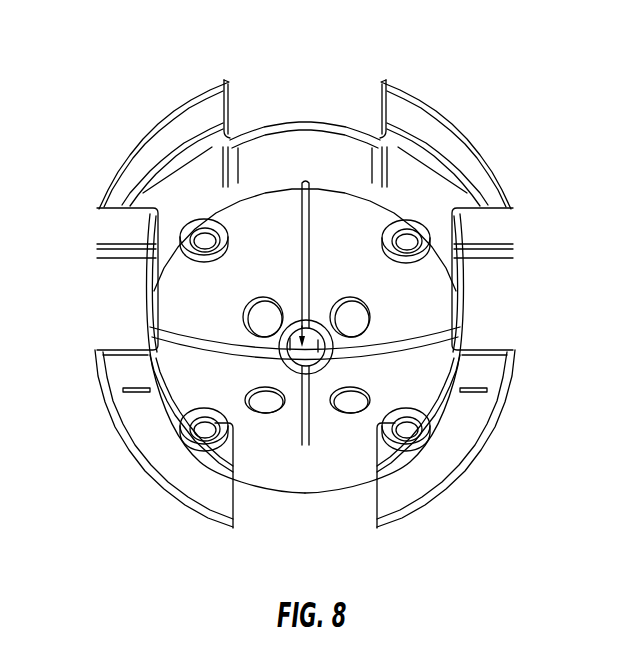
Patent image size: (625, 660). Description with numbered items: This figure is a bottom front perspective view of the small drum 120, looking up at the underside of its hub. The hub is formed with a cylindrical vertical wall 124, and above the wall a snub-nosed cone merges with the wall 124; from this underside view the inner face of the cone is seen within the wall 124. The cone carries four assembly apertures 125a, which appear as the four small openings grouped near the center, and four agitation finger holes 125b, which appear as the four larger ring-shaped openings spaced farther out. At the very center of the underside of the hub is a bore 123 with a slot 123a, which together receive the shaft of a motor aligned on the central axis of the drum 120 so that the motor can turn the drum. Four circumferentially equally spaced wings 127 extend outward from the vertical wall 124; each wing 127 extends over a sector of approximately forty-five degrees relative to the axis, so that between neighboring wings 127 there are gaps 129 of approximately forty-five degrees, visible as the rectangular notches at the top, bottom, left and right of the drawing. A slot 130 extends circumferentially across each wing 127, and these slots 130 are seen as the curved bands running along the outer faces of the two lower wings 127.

The small drum 120 is at (482, 131).
The bore 123 is at (296, 322).
The slot 123a is at (318, 322).
The cylindrical vertical wall 124 is at (322, 140).
The assembly apertures 125a is at (357, 335).
The agitation finger holes 125b is at (200, 428).
The wings 127 is at (500, 186).
The gaps 129 is at (363, 95).
The slot 130 is at (183, 493).